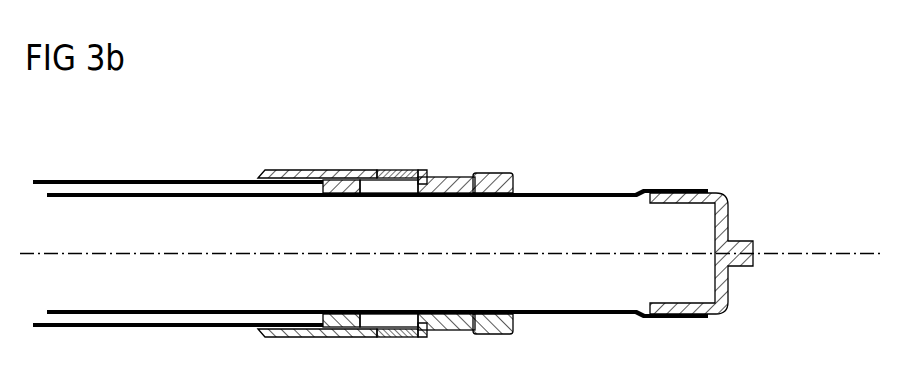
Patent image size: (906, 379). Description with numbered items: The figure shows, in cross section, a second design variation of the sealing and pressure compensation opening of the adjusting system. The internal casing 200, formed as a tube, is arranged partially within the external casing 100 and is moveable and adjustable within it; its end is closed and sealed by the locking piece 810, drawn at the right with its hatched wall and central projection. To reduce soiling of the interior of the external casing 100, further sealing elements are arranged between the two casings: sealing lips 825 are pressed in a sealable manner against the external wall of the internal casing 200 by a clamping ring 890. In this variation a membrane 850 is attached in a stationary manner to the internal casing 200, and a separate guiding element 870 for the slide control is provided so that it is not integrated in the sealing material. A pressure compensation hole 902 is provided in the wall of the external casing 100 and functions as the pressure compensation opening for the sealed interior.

The external casing 100 is at (167, 180).
The internal casing 200 is at (604, 192).
The locking piece 810 is at (728, 289).
The sealing lips 825 is at (438, 177).
The membrane 850 is at (397, 176).
The guiding element 870 is at (343, 176).
The clamping ring 890 is at (503, 173).
The pressure compensation hole 902 is at (326, 181).